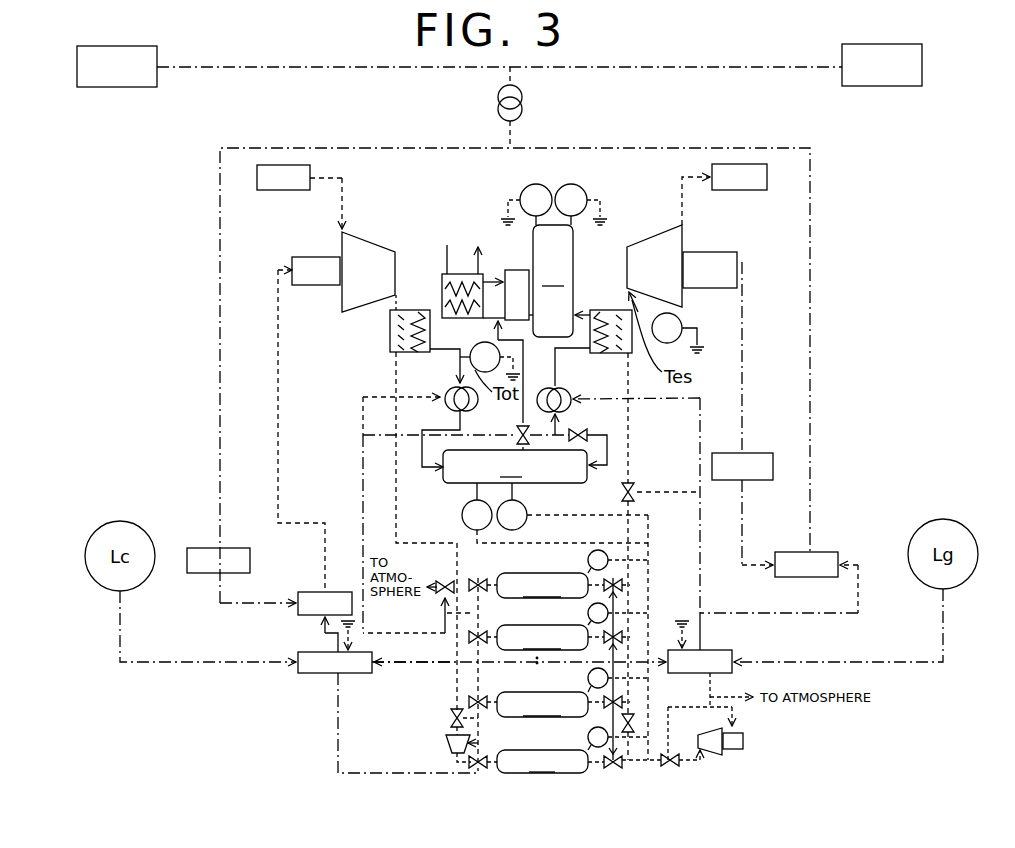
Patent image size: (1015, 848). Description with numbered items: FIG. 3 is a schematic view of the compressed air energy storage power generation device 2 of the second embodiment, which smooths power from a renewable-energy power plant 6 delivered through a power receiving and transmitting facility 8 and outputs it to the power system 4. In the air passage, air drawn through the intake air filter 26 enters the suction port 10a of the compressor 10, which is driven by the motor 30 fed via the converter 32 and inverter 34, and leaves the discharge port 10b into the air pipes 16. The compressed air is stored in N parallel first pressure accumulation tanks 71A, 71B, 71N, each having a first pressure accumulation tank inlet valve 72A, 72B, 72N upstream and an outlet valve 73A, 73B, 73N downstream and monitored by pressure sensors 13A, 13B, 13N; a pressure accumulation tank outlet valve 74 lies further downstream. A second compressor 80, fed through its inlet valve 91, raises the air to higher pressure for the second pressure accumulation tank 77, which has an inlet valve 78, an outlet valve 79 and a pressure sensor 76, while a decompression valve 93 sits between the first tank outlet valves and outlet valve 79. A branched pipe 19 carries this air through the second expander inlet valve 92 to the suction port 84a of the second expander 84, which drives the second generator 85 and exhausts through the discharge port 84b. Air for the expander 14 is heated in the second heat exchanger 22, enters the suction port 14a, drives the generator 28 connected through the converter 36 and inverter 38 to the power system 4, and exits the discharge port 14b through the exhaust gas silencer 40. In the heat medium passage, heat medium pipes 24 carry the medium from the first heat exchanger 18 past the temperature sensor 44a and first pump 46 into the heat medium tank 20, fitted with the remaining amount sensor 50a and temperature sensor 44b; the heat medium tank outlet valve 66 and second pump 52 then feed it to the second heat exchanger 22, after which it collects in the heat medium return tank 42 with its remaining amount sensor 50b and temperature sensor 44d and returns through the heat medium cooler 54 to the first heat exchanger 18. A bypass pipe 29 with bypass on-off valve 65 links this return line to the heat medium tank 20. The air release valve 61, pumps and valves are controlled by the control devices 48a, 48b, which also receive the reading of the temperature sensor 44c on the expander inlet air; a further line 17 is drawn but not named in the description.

The compressed air energy storage power generation device 2 is at (852, 195).
The power system 4 is at (922, 66).
The power plant 6 is at (77, 67).
The power receiving and transmitting facility 8 is at (522, 103).
The compressor 10 is at (342, 298).
The suction port 10a is at (340, 232).
The discharge port 10b is at (396, 282).
The pressure sensor 13A is at (588, 560).
The pressure sensor 13B is at (588, 613).
The pressure sensor 13N is at (588, 678).
The expander 14 is at (685, 238).
The suction port 14a is at (626, 286).
The discharge port 14b is at (684, 230).
The air pipes 16 is at (344, 178).
The air pipe 17 is at (443, 580).
The first heat exchanger 18 is at (390, 338).
The branched pipe 19 is at (645, 762).
The heat medium tank 20 is at (515, 466).
The second heat exchanger 22 is at (633, 354).
The heat medium pipes 24 is at (457, 411).
The intake air filter 26 is at (262, 190).
The generator 28 is at (737, 262).
The bypass pipe 29 is at (526, 381).
The motor 30 is at (290, 264).
The converter 32 is at (195, 548).
The inverter 34 is at (298, 612).
The converter 36 is at (757, 453).
The inverter 38 is at (838, 552).
The exhaust gas silencer 40 is at (767, 166).
The heat medium return tank 42 is at (553, 281).
The temperature sensor 44a is at (478, 346).
The temperature sensor 44b is at (527, 508).
The temperature sensor 44c is at (681, 320).
The temperature sensor 44d is at (576, 186).
The first pump 46 is at (450, 388).
The control device 48a is at (298, 655).
The control device 48b is at (732, 652).
The remaining amount sensor 50a is at (462, 520).
The remaining amount sensor 50b is at (521, 190).
The second pump 52 is at (565, 392).
The heat medium cooler 54 is at (488, 278).
The air release valve 61 is at (440, 598).
The bypass on-off valve 65 is at (518, 428).
The heat medium tank outlet valve 66 is at (581, 430).
The first pressure accumulation tank 71A is at (542, 585).
The first pressure accumulation tank 71B is at (542, 637).
The first pressure accumulation tank 71N is at (542, 704).
The first pressure accumulation tank inlet valve 72A is at (478, 578).
The first pressure accumulation tank inlet valve 72B is at (482, 630).
The first pressure accumulation tank inlet valve 72N is at (482, 695).
The first pressure accumulation tank outlet valve 73A is at (624, 585).
The first pressure accumulation tank outlet valve 73B is at (622, 637).
The first pressure accumulation tank outlet valve 73N is at (625, 705).
The pressure accumulation tank outlet valve 74 is at (636, 488).
The pressure sensor 76 is at (588, 737).
The second pressure accumulation tank 77 is at (542, 762).
The second pressure accumulation tank inlet valve 78 is at (485, 757).
The second pressure accumulation tank outlet valve 79 is at (614, 768).
The second compressor 80 is at (446, 745).
The second expander 84 is at (710, 750).
The suction port 84a is at (698, 745).
The discharge port 84b is at (733, 725).
The second generator 85 is at (743, 742).
The second compressor inlet valve 91 is at (450, 718).
The second expander inlet valve 92 is at (670, 768).
The decompression valve 93 is at (631, 733).